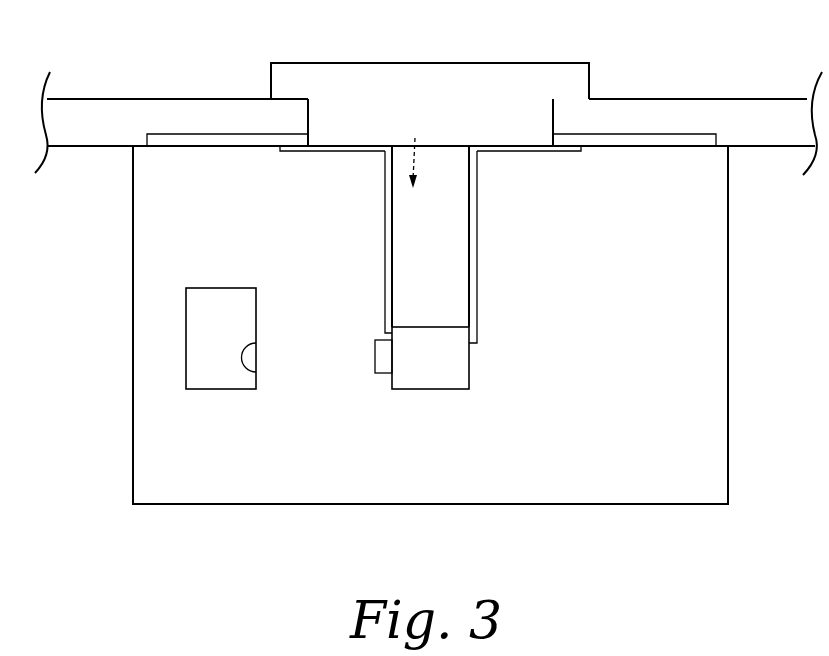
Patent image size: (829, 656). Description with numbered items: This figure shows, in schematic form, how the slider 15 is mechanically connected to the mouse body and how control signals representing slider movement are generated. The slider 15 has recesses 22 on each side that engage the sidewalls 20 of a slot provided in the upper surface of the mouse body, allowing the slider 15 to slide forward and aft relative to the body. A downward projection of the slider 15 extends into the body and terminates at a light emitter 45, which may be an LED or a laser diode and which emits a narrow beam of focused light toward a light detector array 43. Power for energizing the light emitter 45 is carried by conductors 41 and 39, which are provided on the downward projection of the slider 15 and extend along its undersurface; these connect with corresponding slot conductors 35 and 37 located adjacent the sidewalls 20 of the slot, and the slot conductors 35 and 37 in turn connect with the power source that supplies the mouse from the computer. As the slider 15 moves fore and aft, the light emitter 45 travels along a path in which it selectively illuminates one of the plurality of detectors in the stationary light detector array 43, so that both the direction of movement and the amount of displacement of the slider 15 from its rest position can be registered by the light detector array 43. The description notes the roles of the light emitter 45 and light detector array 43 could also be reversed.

The slider 15 is at (447, 80).
The sidewalls of the slot 20 is at (310, 115).
The recesses 22 is at (293, 97).
The slot conductor 35 is at (652, 146).
The slot conductor 37 is at (180, 146).
The conductor 39 is at (331, 151).
The conductor 41 is at (387, 250).
The light detector array 43 is at (213, 390).
The light emitter 45 is at (428, 390).